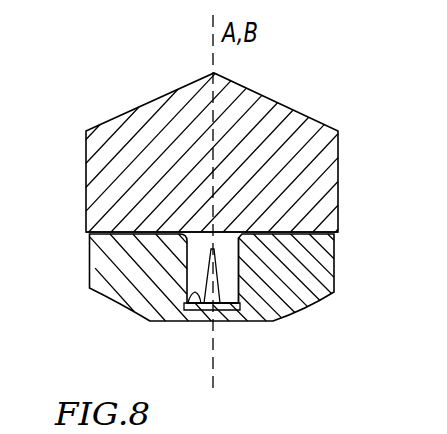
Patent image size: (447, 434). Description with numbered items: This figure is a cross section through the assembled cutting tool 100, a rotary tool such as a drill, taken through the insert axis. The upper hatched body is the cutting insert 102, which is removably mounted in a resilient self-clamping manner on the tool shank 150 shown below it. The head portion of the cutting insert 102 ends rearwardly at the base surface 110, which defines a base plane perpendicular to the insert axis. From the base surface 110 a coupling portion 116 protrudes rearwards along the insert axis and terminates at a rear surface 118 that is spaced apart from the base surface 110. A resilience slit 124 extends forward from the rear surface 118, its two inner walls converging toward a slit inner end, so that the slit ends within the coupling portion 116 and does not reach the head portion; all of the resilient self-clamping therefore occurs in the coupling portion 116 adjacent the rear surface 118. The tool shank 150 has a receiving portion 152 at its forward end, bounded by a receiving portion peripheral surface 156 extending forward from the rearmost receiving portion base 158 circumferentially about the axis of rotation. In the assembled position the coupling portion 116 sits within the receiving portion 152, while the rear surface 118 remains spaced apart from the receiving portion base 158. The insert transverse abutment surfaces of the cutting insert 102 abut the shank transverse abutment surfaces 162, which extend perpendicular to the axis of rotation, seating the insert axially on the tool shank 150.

The cutting tool 100 is at (216, 129).
The cutting insert 102 is at (110, 113).
The base surface 110 is at (334, 259).
The coupling portion 116 is at (240, 288).
The rear surface 118 is at (226, 308).
The resilience slit 124 is at (213, 308).
The tool shank 150 is at (206, 307).
The receiving portion 152 is at (174, 265).
The receiving portion peripheral surface 156 is at (196, 290).
The receiving portion base 158 is at (200, 307).
The shank transverse abutment surface 162 is at (322, 234).